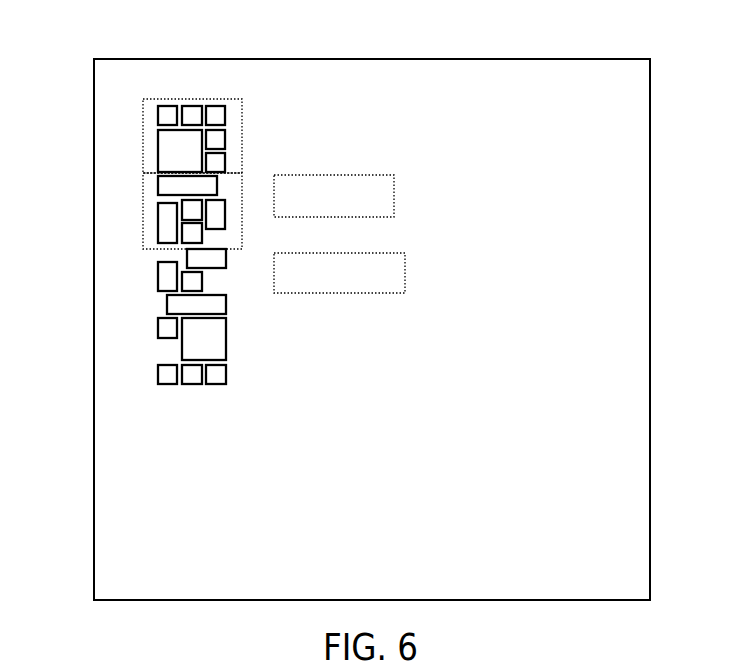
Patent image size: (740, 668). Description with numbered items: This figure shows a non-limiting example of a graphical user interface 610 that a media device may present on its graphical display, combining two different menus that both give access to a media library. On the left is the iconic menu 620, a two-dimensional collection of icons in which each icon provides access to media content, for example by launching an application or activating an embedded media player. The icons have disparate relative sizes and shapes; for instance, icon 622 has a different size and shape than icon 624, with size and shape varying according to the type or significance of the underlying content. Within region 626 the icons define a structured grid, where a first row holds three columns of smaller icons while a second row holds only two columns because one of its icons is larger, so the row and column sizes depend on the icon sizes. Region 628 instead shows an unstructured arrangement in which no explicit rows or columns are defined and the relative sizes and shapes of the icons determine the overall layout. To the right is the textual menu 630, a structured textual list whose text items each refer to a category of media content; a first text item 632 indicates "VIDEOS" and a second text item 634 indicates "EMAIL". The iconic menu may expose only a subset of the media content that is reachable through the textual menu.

The graphical user interface 610 is at (650, 250).
The iconic menu 620 is at (196, 76).
The icon 622 is at (167, 273).
The icon 624 is at (177, 309).
The region 626 is at (143, 150).
The region 628 is at (143, 215).
The textual menu 630 is at (326, 76).
The first text item 632 is at (395, 193).
The second text item 634 is at (406, 273).